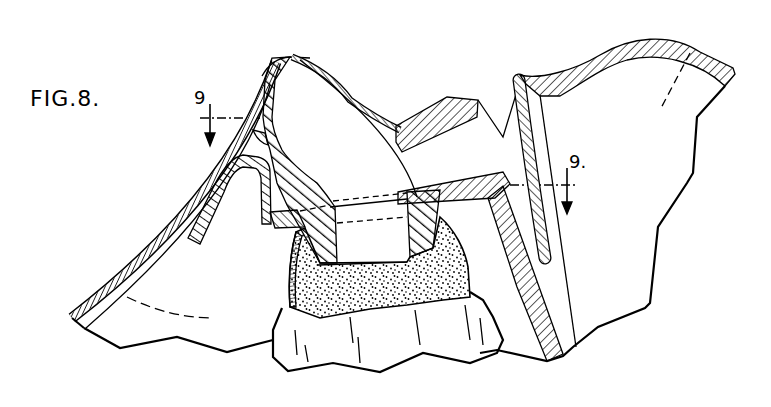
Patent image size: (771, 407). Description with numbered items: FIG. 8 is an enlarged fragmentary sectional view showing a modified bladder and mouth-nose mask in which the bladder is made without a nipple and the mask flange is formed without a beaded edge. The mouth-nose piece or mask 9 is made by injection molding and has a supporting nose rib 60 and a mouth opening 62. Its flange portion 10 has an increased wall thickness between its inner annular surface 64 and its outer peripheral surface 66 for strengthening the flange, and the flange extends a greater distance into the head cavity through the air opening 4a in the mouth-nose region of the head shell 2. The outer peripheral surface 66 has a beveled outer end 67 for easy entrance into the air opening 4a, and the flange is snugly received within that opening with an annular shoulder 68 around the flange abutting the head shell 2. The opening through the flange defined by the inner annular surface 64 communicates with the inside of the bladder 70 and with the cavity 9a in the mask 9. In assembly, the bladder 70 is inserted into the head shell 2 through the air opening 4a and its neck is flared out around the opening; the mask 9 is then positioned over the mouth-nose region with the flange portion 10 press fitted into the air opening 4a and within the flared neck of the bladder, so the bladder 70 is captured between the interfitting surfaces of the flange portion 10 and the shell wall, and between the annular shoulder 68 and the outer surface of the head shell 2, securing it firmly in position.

The head shell 2 is at (102, 297).
The mouth-nose piece or mask 9 is at (273, 60).
The cavity 9a is at (297, 87).
The supporting nose rib 60 is at (279, 120).
The mouth opening 62 is at (423, 123).
The inner annular surface 64 is at (338, 222).
The annular shoulder 68 is at (272, 206).
The air opening 4a is at (278, 220).
The outer peripheral surface 66 is at (299, 243).
The beveled outer end 67 is at (293, 271).
The flange portion 10 is at (379, 267).
The bladder 70 is at (288, 351).